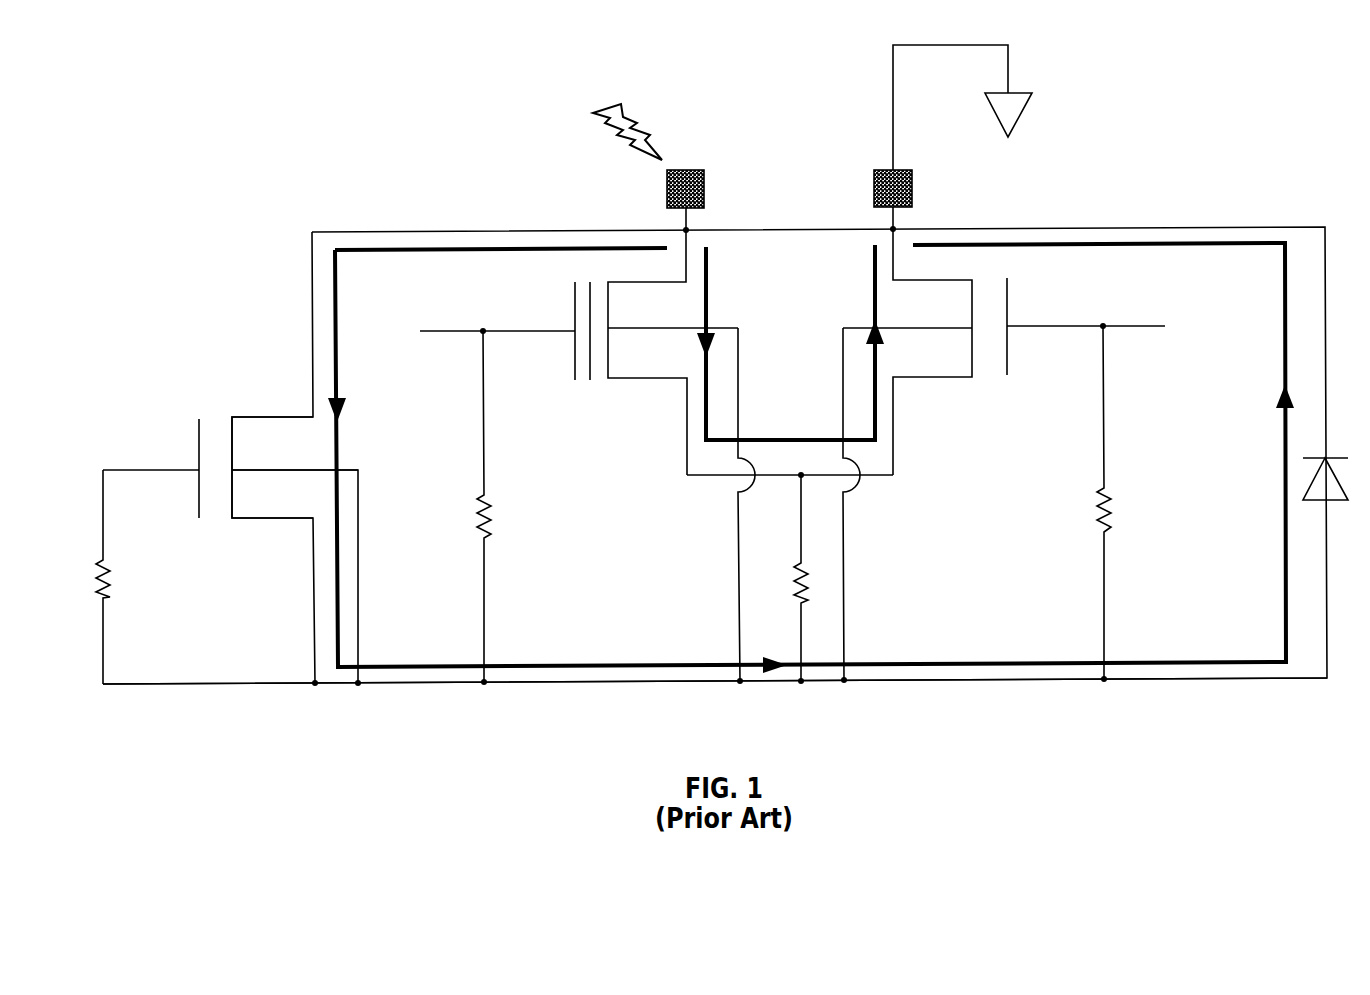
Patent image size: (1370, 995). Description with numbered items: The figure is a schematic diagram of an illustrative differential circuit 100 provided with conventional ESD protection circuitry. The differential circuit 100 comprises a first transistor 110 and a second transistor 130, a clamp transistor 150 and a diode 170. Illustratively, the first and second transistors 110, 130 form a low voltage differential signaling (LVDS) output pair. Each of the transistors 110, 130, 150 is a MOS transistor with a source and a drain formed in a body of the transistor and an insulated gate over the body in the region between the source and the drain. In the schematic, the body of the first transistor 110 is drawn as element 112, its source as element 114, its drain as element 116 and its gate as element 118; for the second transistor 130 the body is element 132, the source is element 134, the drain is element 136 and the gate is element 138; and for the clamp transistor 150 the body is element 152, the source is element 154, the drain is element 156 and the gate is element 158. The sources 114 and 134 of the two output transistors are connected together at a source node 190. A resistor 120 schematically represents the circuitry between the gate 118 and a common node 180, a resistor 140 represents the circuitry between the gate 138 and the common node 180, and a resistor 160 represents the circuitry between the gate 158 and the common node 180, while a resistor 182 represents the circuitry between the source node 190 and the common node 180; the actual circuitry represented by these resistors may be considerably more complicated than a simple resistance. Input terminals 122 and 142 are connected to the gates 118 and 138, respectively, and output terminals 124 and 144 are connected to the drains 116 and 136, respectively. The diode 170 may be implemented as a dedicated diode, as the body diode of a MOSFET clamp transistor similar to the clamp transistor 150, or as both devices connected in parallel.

The differential circuit 100 is at (263, 87).
The first transistor 110 is at (592, 382).
The body of first transistor 112 is at (622, 328).
The source of first transistor 114 is at (622, 378).
The drain of first transistor 116 is at (663, 280).
The gate of first transistor 118 is at (575, 313).
The resistor 120 is at (490, 512).
The input terminal 122 is at (430, 332).
The output terminal 124 is at (667, 190).
The second transistor 130 is at (990, 375).
The body of second transistor 132 is at (948, 328).
The source of second transistor 134 is at (948, 378).
The drain of second transistor 136 is at (908, 278).
The gate of second transistor 138 is at (1008, 308).
The resistor 140 is at (1097, 510).
The input terminal 142 is at (1142, 328).
The output terminal 144 is at (874, 190).
The clamp transistor 150 is at (216, 523).
The body of clamp transistor 152 is at (303, 468).
The source of clamp transistor 154 is at (303, 517).
The drain of clamp transistor 156 is at (290, 414).
The gate of clamp transistor 158 is at (199, 443).
The resistor 160 is at (105, 573).
The diode 170 is at (1318, 503).
The common node 180 is at (620, 683).
The resistor 182 is at (795, 573).
The source node 190 is at (800, 477).